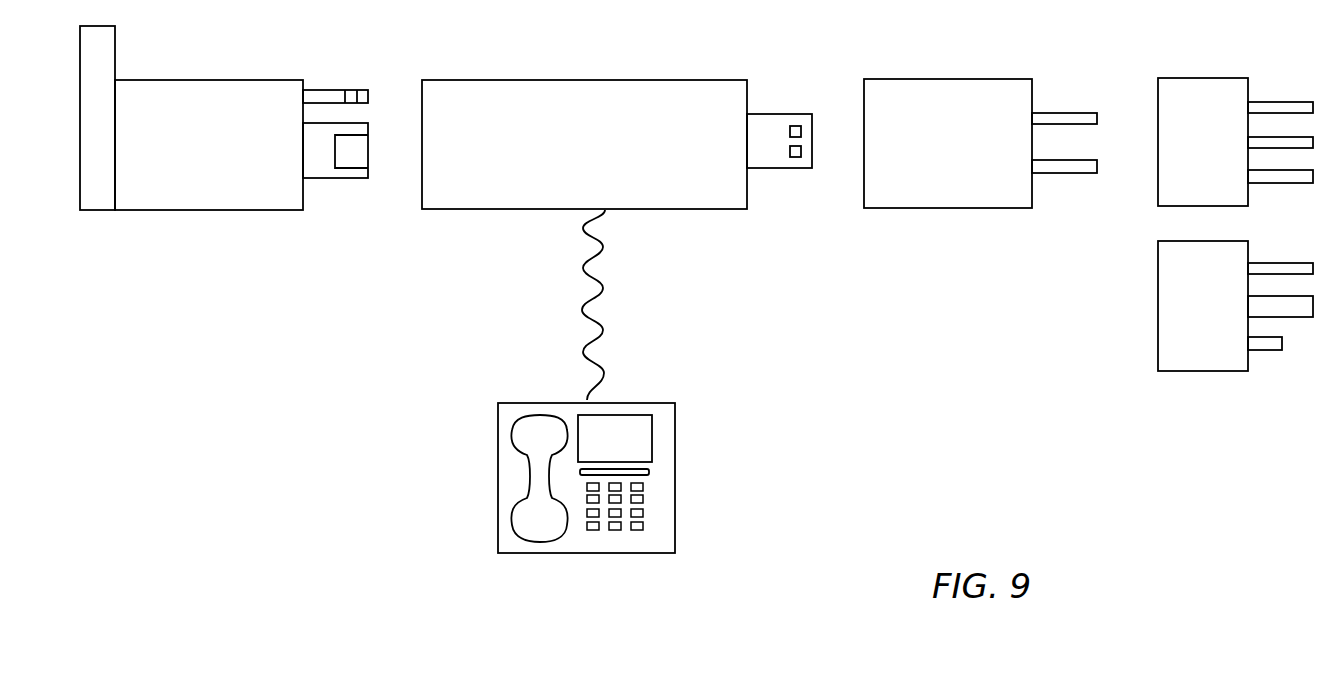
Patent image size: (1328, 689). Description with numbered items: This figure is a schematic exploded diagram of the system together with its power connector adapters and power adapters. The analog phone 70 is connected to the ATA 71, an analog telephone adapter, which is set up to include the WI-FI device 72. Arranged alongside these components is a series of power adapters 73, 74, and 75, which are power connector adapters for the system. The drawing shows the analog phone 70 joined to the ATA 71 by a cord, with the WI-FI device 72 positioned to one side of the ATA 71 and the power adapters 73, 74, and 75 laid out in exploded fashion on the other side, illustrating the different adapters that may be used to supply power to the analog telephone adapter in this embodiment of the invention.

The analog phone 70 is at (637, 400).
The ATA 71 is at (657, 80).
The Wi-Fi device 72 is at (233, 80).
The power adapter 73 is at (990, 79).
The power adapter 74 is at (1222, 78).
The power adapter 75 is at (1235, 241).